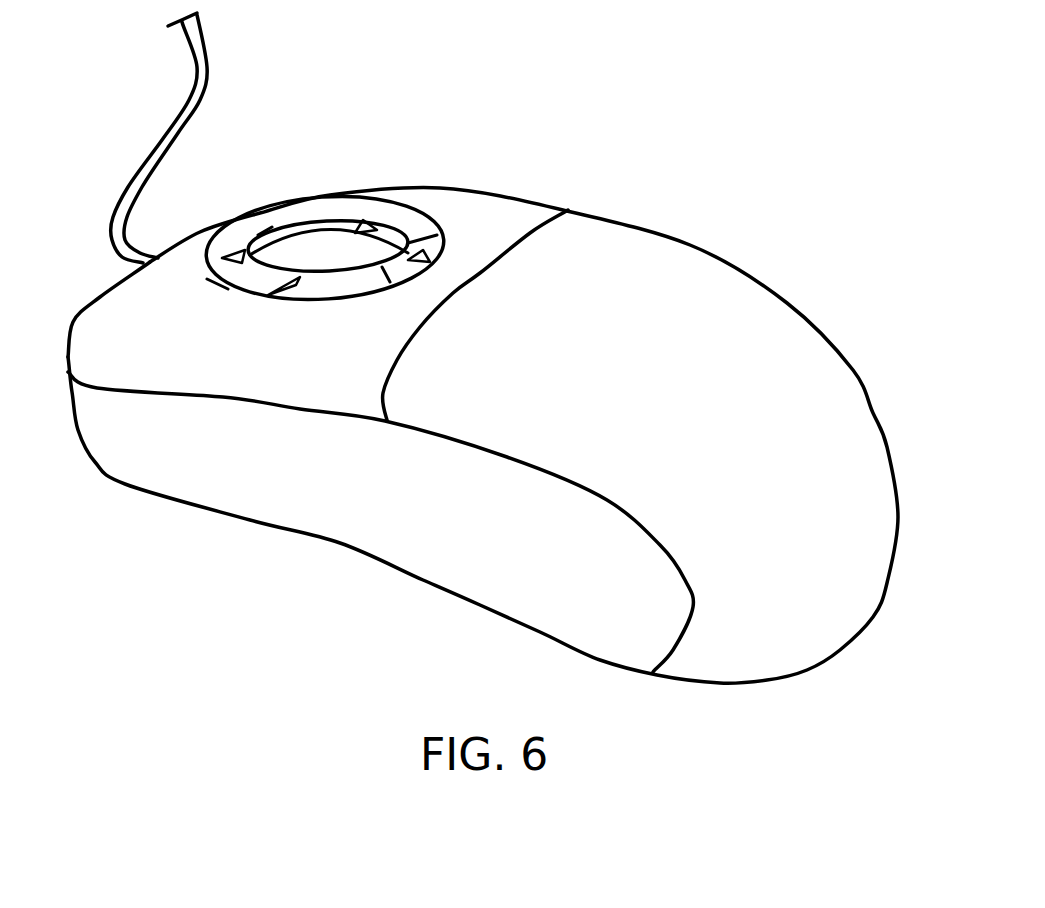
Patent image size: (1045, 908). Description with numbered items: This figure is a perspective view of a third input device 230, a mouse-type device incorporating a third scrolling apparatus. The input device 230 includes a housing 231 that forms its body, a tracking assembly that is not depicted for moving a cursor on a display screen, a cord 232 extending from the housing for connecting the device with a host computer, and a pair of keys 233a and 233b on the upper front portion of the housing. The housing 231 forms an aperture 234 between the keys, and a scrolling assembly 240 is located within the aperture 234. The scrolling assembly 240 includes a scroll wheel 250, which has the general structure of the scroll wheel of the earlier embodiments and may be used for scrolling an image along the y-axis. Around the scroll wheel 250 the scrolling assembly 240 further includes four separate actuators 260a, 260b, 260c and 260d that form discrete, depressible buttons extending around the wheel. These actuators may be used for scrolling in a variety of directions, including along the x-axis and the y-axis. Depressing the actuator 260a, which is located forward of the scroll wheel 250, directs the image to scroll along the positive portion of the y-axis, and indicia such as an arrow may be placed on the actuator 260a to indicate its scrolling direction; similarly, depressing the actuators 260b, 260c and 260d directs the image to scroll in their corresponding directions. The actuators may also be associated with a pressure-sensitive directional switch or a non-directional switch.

The input device 230 is at (580, 158).
The housing 231 is at (432, 543).
The cord 232 is at (210, 60).
The key 233a is at (117, 313).
The key 233b is at (435, 212).
The aperture 234 is at (288, 303).
The scrolling assembly 240 is at (222, 292).
The scroll wheel 250 is at (293, 250).
The actuator 260a is at (240, 243).
The actuator 260b is at (378, 225).
The actuator 260c is at (417, 278).
The actuator 260d is at (350, 285).